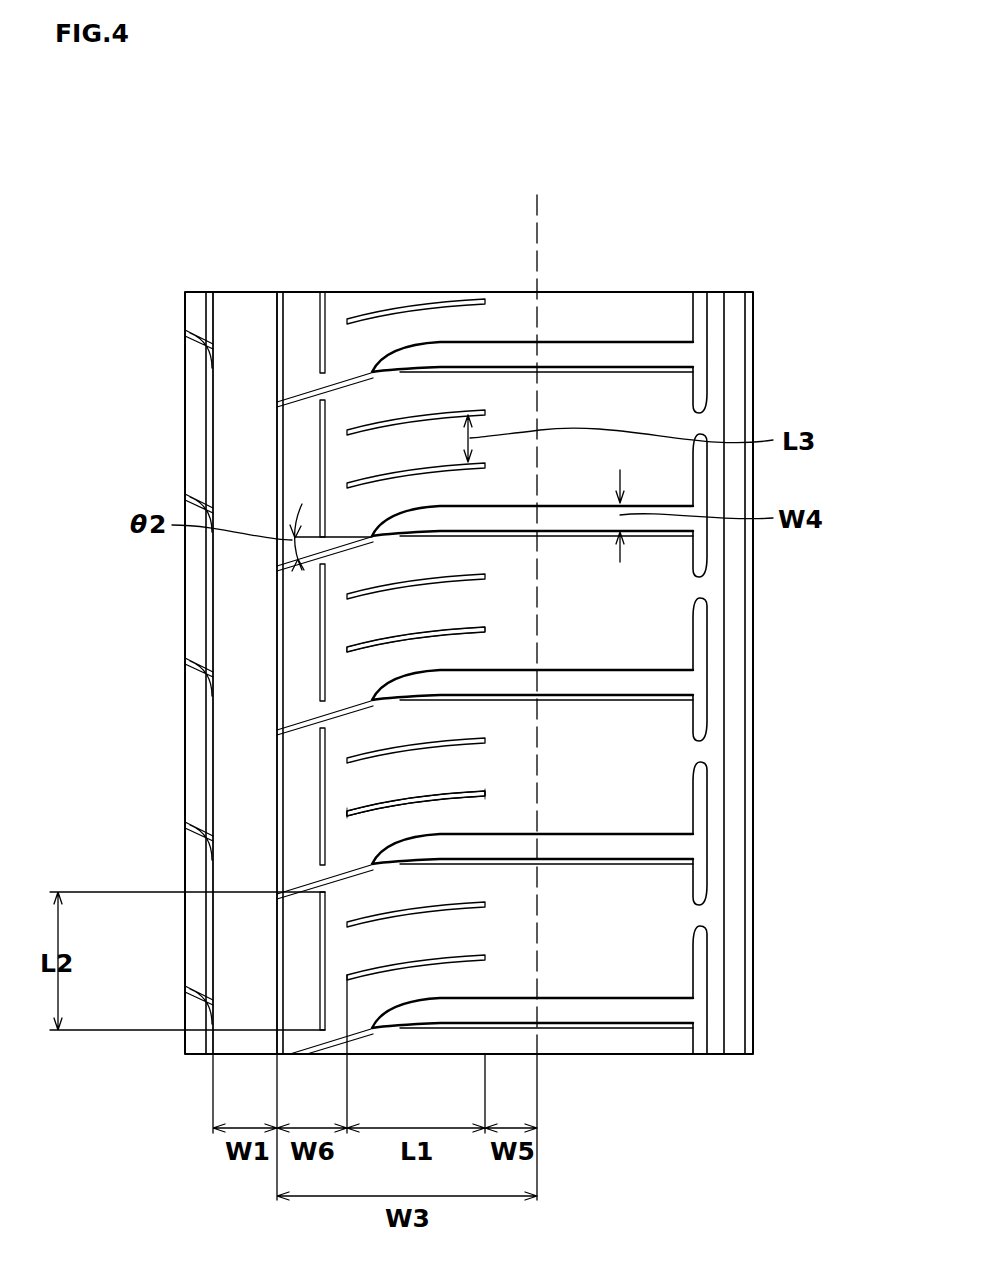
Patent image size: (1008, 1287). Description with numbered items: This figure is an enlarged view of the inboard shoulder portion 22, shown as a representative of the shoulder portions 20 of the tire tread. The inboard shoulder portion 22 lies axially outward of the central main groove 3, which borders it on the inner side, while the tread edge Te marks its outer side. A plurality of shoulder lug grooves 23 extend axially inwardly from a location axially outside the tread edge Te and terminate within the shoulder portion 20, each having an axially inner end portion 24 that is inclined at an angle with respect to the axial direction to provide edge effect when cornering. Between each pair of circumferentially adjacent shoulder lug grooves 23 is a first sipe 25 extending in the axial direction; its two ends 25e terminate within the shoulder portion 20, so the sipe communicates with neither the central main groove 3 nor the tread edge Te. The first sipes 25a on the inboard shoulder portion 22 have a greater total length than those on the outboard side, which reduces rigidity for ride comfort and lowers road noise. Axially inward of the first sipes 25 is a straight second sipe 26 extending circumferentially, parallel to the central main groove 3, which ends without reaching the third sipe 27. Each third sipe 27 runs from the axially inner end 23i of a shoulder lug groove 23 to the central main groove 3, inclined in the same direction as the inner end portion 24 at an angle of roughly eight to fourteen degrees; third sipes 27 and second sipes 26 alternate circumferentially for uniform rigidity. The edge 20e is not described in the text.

The central main groove 3 is at (253, 308).
The shoulder portion 20 is at (442, 386).
The inboard shoulder portion 22 is at (520, 673).
The shoulder lug groove 23 is at (450, 513).
The axially inner end of shoulder lug groove 23i is at (372, 702).
The axially inner end portion of shoulder lug groove 24 is at (385, 339).
The first sipe 25 is at (368, 425).
The first sipe on inboard shoulder portion 25a is at (413, 638).
The axial end of first sipe 25e is at (347, 812).
The second sipe 26 is at (320, 445).
The third sipe 27 is at (342, 382).
The edge of land portion 20e is at (275, 672).
The tread edge Te is at (538, 678).